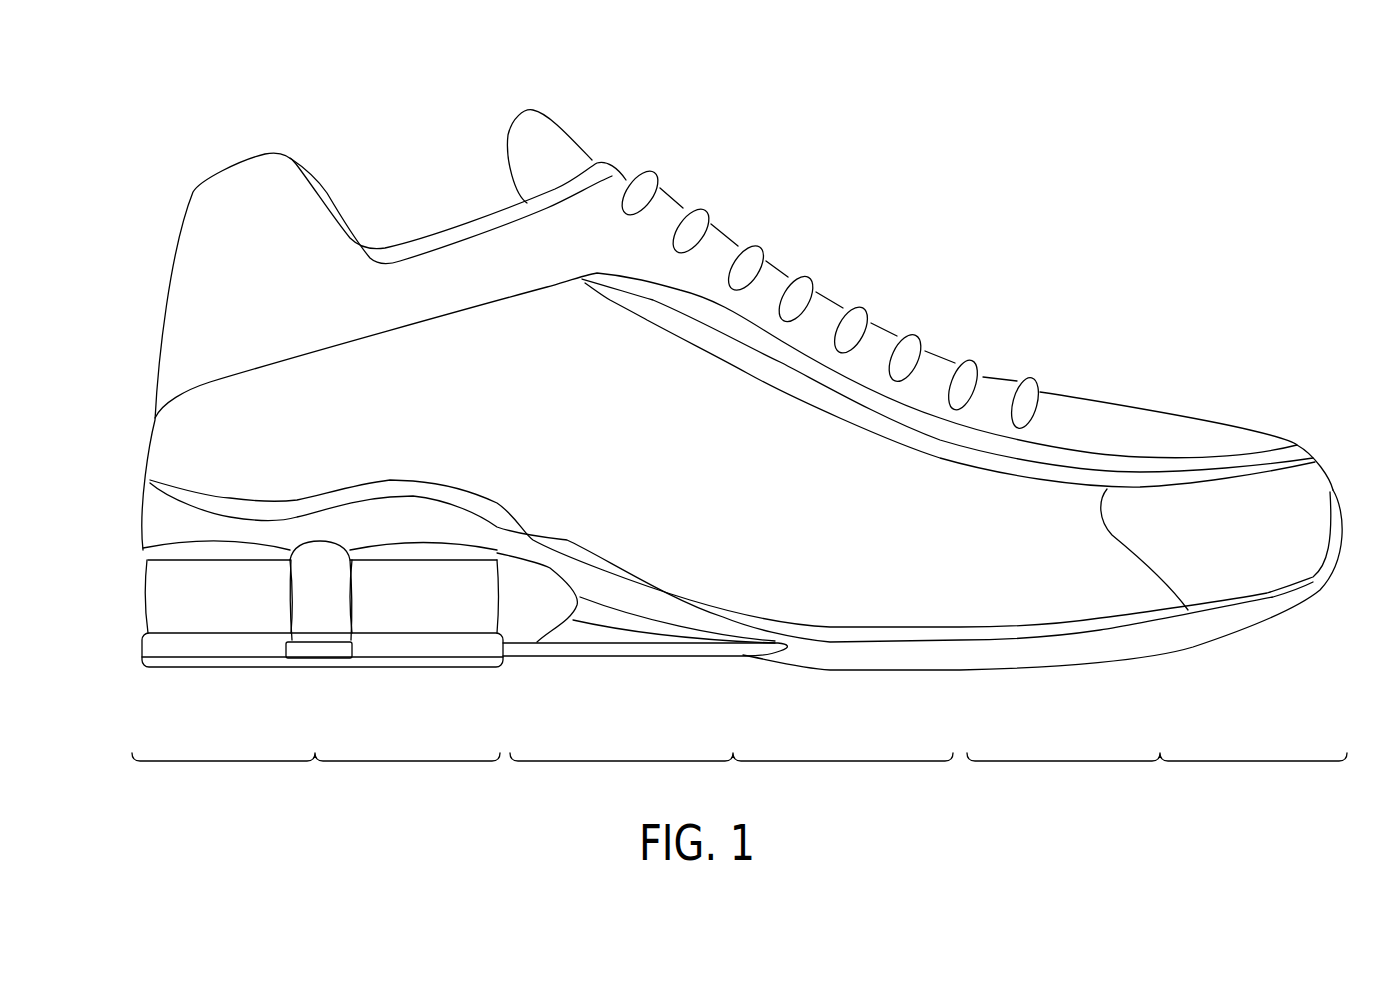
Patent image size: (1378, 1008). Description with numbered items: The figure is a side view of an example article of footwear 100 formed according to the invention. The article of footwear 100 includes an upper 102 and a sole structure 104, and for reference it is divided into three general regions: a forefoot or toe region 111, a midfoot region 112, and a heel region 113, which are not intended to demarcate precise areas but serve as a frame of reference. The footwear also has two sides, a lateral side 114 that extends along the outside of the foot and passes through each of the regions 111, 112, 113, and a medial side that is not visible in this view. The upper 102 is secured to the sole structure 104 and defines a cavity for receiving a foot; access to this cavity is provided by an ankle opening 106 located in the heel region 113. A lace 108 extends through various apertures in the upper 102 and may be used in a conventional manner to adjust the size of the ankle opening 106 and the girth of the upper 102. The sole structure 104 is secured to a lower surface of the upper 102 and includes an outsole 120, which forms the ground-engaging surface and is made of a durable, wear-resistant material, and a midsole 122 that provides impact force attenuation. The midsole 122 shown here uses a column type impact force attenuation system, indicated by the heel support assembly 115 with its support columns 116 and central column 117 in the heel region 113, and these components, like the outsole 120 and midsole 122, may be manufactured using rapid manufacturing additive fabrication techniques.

The article of footwear 100 is at (930, 280).
The upper 102 is at (1167, 407).
The sole structure 104 is at (1170, 633).
The ankle opening 106 is at (308, 162).
The lace 108 is at (757, 247).
The forefoot or toe region 111 is at (1157, 778).
The midfoot region 112 is at (731, 778).
The heel region 113 is at (316, 778).
The lateral side 114 is at (789, 526).
The heel support assembly 115 is at (277, 632).
The support columns 116 is at (220, 617).
The central column 117 is at (333, 625).
The outsole 120 is at (1005, 677).
The midsole 122 is at (352, 523).